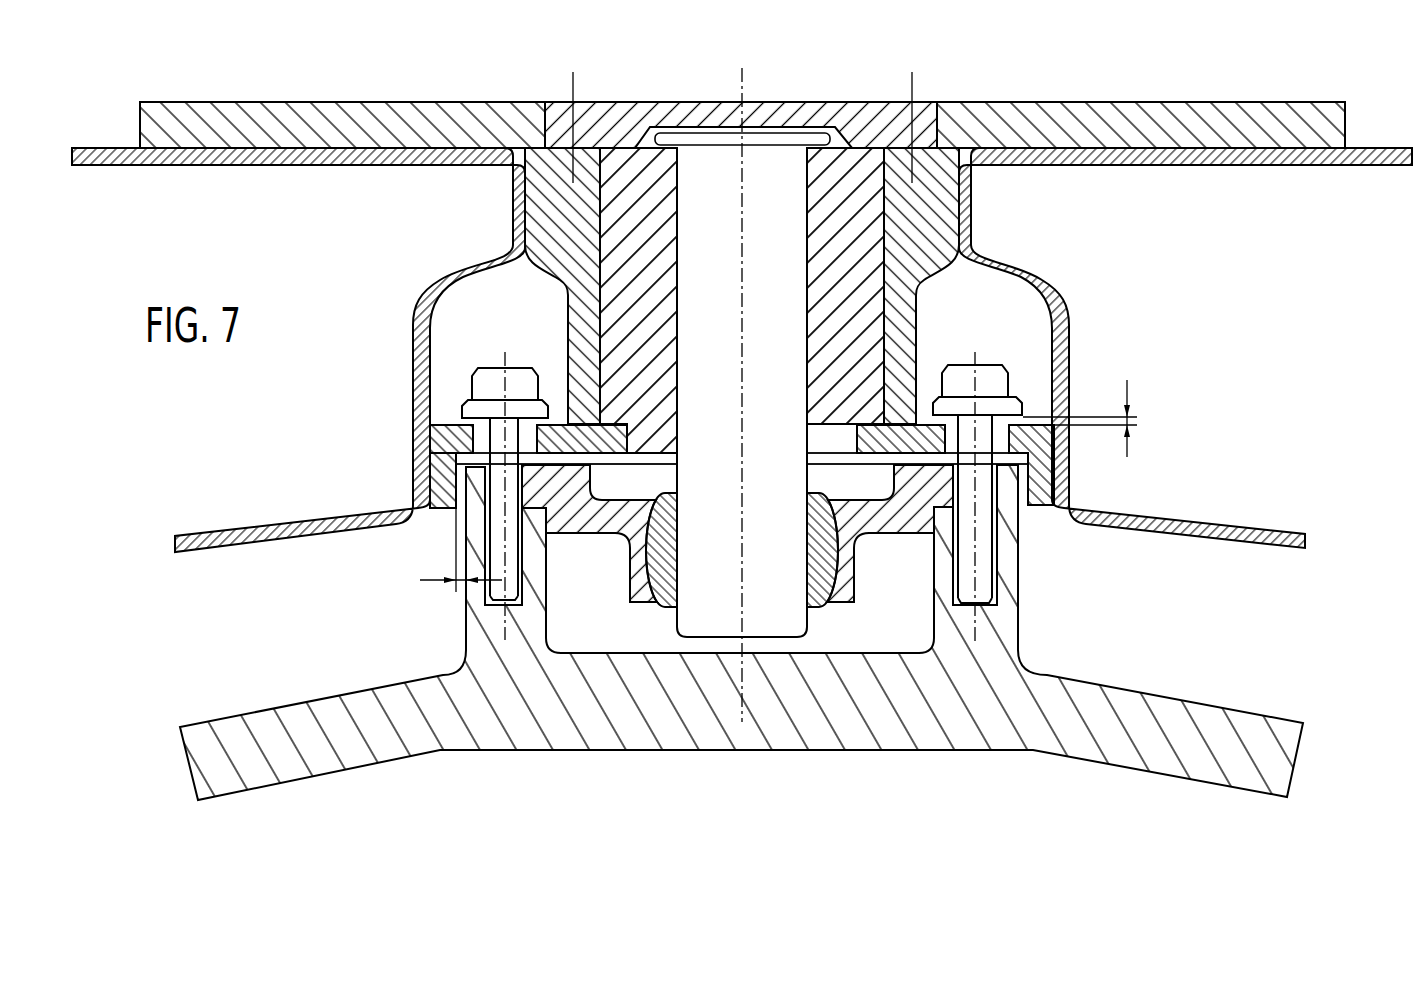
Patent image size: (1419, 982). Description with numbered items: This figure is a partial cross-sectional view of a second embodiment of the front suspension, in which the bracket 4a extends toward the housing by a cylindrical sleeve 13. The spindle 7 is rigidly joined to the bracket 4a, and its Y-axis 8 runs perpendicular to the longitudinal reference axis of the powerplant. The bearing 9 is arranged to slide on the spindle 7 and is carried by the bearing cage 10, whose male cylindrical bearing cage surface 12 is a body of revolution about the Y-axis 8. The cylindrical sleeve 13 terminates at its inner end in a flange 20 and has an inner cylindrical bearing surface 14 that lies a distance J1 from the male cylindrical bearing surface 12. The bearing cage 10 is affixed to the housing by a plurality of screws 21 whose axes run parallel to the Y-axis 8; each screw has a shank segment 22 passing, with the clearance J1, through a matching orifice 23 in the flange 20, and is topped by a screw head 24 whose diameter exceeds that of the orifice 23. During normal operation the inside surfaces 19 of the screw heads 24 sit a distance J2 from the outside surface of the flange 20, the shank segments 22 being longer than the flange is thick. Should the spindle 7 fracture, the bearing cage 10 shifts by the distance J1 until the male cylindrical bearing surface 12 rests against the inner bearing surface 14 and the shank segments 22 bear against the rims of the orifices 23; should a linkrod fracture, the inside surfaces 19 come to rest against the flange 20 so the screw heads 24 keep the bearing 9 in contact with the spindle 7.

The bracket 4a is at (352, 130).
The Y-axis 8 is at (742, 90).
The cylindrical sleeve 13 is at (530, 216).
The inner cylindrical bearing surface 14 is at (414, 456).
The screws 21 is at (1020, 365).
The spindle 7 is at (702, 614).
The bearing 9 is at (826, 556).
The bearing cage 10 is at (586, 512).
The male cylindrical bearing cage surface 12 is at (456, 498).
The inside surfaces of the screw heads 19 is at (493, 400).
The flange 20 is at (443, 442).
The shank segments 22 is at (983, 430).
The orifices 23 is at (1053, 455).
The screw heads 24 is at (957, 408).
The distance J1 is at (459, 562).
The distance J2 is at (1095, 418).